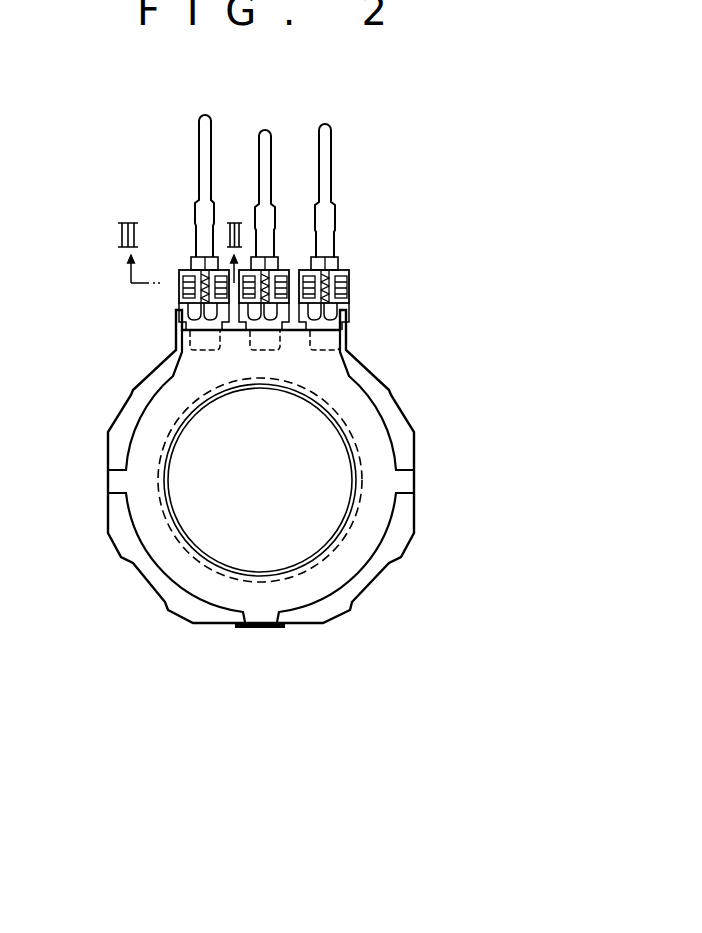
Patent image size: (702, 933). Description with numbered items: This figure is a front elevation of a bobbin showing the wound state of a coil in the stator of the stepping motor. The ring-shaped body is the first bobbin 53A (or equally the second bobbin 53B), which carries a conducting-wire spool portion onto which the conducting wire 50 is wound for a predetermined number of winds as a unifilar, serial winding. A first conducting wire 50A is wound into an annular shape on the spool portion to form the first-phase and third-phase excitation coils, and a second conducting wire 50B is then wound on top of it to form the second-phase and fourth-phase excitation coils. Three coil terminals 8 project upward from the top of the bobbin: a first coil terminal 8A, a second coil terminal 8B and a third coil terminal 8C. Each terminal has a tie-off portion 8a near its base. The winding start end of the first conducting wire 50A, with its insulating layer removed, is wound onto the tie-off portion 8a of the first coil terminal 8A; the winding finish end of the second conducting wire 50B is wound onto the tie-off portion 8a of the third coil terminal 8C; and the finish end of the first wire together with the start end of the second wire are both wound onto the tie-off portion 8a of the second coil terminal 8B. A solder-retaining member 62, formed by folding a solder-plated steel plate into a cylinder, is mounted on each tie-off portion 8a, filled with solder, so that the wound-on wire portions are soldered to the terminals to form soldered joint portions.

The coil terminal 8 is at (256, 186).
The first coil terminal 8A is at (198, 153).
The second coil terminal 8B is at (274, 168).
The third coil terminal 8C is at (335, 205).
The tie-off portion 8a is at (338, 265).
The solder-retaining member 62 is at (348, 274).
The conducting wire 50 is at (270, 304).
The first conducting wire 50A is at (174, 343).
The second conducting wire 50B is at (250, 330).
The first bobbin 53A is at (336, 468).
The second bobbin 53B is at (363, 398).